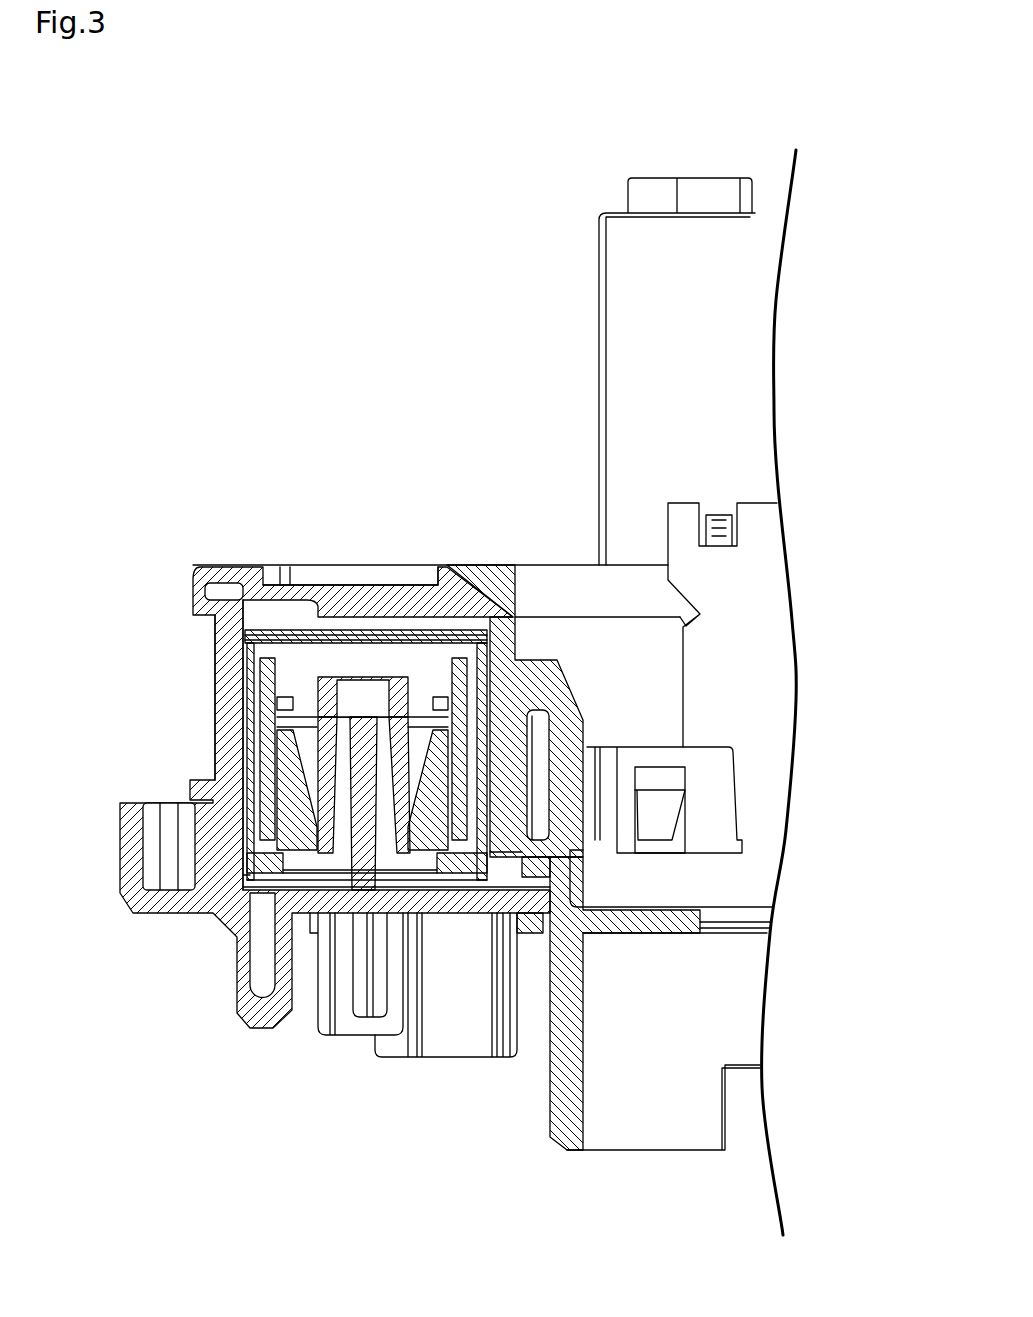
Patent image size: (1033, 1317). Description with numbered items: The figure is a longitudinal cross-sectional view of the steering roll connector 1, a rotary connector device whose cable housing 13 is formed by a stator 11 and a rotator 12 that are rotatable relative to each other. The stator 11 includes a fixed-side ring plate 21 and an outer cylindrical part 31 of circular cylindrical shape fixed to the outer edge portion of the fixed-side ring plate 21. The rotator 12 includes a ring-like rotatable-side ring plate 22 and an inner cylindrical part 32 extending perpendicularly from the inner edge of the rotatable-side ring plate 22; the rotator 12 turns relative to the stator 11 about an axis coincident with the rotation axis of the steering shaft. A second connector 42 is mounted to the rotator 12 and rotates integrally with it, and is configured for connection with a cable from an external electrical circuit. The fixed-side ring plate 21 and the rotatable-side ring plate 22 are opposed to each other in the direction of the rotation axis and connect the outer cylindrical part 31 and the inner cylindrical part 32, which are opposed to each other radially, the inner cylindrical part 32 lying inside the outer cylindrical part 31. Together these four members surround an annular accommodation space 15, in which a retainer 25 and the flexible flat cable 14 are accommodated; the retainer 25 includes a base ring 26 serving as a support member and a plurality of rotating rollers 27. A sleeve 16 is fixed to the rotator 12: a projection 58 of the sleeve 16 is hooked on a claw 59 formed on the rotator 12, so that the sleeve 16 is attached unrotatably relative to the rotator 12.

The steering roll connector 1 is at (140, 160).
The stator 11 is at (170, 1042).
The rotator 12 is at (165, 575).
The cable housing 13 is at (148, 440).
The flexible flat cable 14 is at (252, 637).
The accommodation space 15 is at (372, 622).
The sleeve 16 is at (635, 1130).
The fixed-side ring plate 21 is at (448, 903).
The rotatable-side ring plate 22 is at (403, 593).
The retainer 25 is at (480, 582).
The base ring 26 is at (273, 873).
The rotating rollers 27 is at (316, 665).
The outer cylindrical part 31 is at (228, 702).
The inner cylindrical part 32 is at (503, 640).
The second connector 42 is at (598, 350).
The projection 58 is at (708, 757).
The claw 59 is at (662, 777).